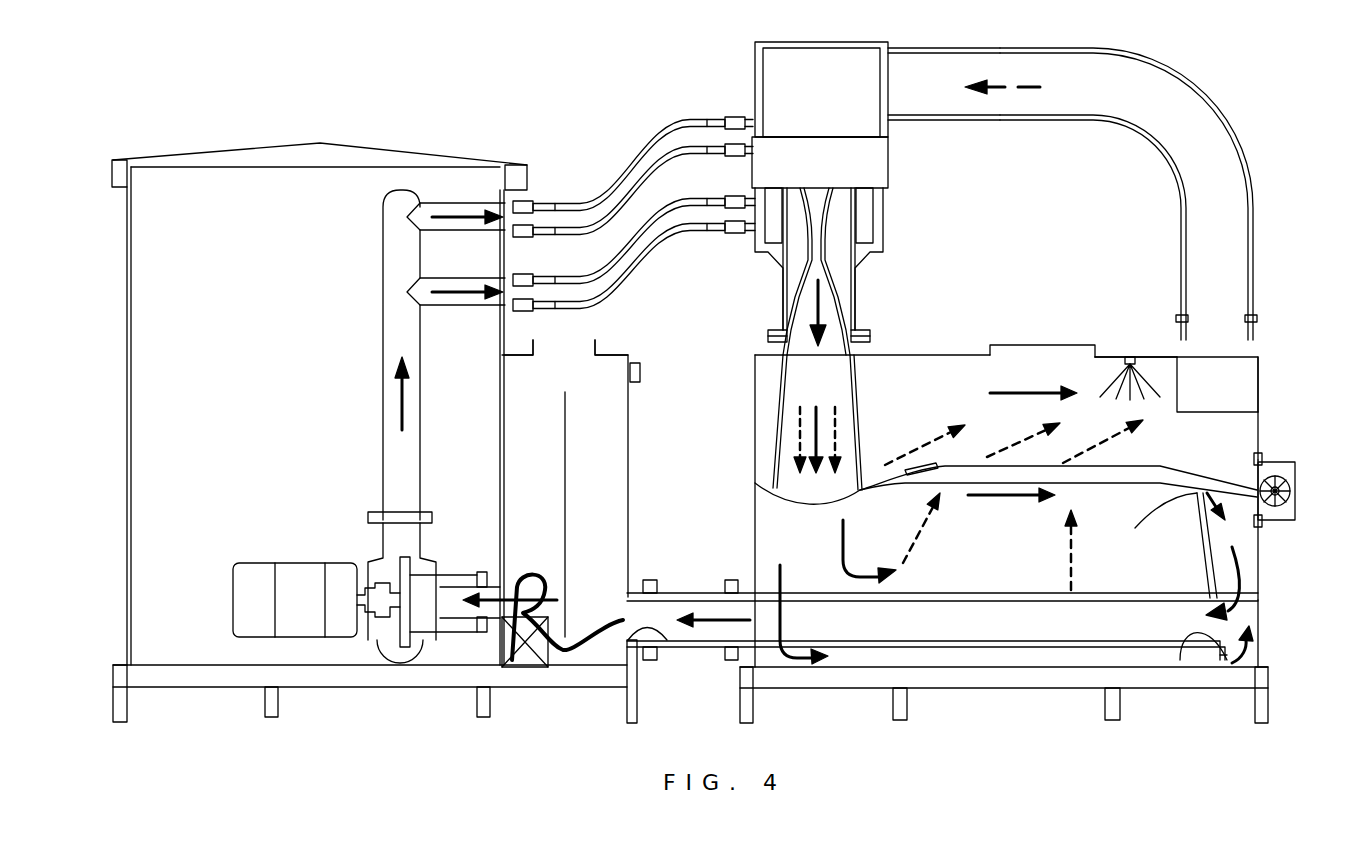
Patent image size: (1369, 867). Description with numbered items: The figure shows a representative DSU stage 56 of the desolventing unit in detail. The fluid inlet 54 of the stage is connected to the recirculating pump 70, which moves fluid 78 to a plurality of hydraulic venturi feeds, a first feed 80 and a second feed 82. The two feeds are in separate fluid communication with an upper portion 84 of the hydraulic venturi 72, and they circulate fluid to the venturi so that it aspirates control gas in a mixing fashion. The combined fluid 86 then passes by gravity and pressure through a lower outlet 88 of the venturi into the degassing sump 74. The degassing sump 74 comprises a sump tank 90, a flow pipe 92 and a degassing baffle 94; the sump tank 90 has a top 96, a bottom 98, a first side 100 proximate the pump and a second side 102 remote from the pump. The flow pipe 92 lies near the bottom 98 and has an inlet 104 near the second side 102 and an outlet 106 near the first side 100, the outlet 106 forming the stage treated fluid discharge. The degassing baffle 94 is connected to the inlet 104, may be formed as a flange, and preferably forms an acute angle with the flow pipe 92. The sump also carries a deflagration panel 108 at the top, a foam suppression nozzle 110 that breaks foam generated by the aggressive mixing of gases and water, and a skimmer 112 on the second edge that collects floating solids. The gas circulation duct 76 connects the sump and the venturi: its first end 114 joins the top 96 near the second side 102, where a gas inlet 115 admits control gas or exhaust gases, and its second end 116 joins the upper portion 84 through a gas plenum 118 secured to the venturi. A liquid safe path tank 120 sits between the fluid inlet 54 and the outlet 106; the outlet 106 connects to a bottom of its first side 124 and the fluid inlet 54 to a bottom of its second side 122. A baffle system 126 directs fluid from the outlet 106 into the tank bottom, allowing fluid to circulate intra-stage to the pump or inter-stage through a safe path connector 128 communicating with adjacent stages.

The fluid inlet 54 is at (475, 630).
The DSU stage 56 is at (518, 118).
The recirculating pump 70 is at (300, 563).
The hydraulic venturi 72 is at (857, 280).
The degassing sump 74 is at (752, 415).
The gas circulation duct 76 is at (1192, 85).
The fluid 78 is at (400, 405).
The first feed 80 is at (448, 305).
The second feed 82 is at (453, 225).
The upper portion of the hydraulic venturi 84 is at (890, 148).
The combined fluid 86 is at (823, 383).
The lower outlet 88 is at (773, 330).
The sump tank 90 is at (1263, 650).
The flow pipe 92 is at (1047, 650).
The degassing baffle 94 is at (1233, 538).
The top of the sump tank 96 is at (1151, 357).
The bottom of the sump tank 98 is at (1223, 690).
The first side of the sump tank 100 is at (752, 517).
The second side of the sump tank 102 is at (1262, 432).
The inlet of the flow pipe 104 is at (1183, 660).
The outlet of the flow pipe 106 is at (667, 640).
The deflagration panel 108 is at (1047, 345).
The foam suppression nozzle 110 is at (1132, 357).
The skimmer 112 is at (1297, 492).
The first end of the gas duct 114 is at (1253, 318).
The gas inlet 115 is at (1262, 382).
The second end of the gas duct 116 is at (920, 50).
The gas plenum 118 is at (753, 78).
The liquid safe path tank 120 is at (578, 645).
The second side of the safe path tank 122 is at (507, 537).
The first side of the safe path tank 124 is at (625, 552).
The baffle system 126 is at (567, 433).
The safe path connector 128 is at (527, 612).